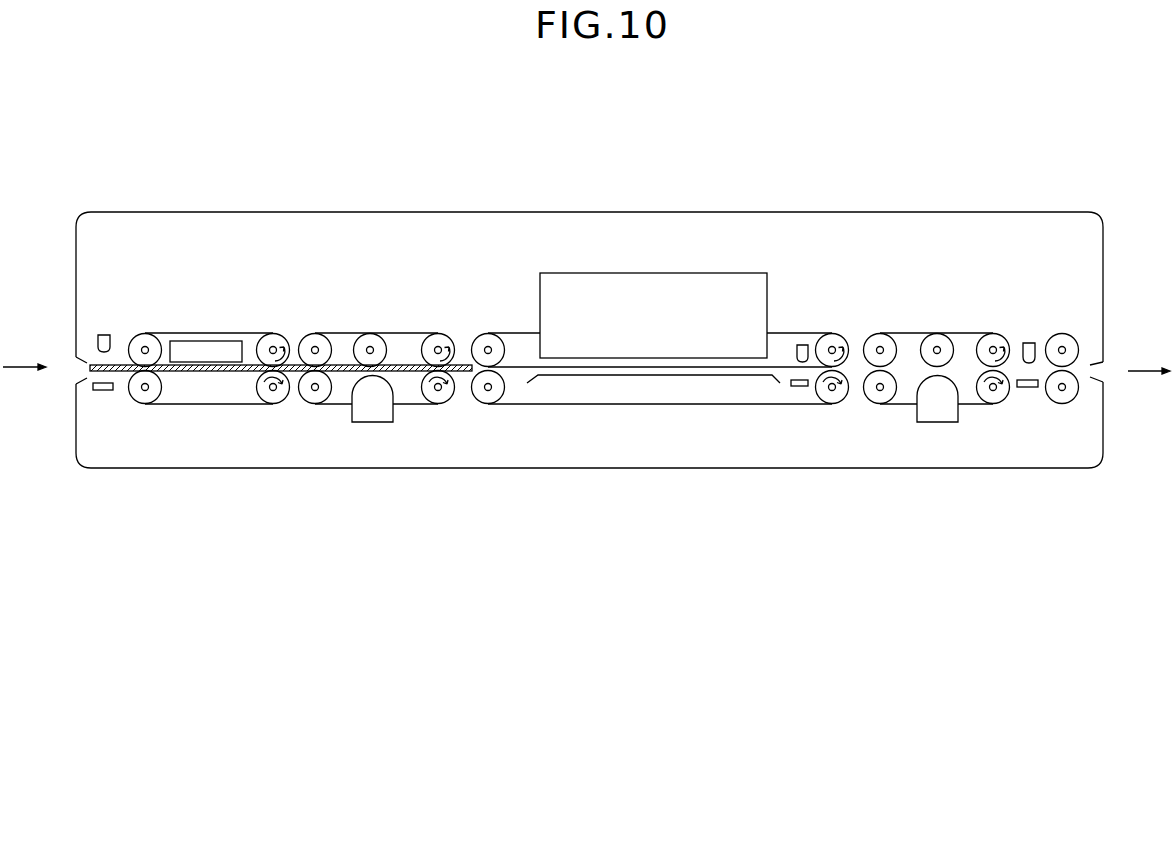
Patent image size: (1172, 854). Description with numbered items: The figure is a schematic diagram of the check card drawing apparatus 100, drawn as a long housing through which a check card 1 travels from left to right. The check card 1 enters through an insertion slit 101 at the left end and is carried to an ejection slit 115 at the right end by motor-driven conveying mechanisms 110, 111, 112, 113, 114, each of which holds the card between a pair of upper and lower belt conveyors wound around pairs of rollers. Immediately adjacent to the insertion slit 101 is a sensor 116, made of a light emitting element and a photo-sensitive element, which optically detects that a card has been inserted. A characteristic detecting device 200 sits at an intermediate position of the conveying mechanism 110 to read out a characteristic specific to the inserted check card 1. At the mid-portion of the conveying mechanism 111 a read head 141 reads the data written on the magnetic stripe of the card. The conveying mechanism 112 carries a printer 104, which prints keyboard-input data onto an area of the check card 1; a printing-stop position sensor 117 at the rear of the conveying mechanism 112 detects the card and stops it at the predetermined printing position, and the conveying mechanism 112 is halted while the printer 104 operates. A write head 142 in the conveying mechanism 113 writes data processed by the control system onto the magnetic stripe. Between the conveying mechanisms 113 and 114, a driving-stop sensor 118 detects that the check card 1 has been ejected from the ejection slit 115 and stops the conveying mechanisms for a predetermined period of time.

The check card 1 is at (462, 365).
The check card drawing apparatus 100 is at (811, 209).
The insertion slit 101 is at (78, 370).
The printer 104 is at (637, 272).
The conveying mechanism 110 is at (165, 404).
The conveying mechanism 111 is at (415, 405).
The conveying mechanism 112 is at (548, 404).
The conveying mechanism 113 is at (973, 404).
The conveying mechanism 114 is at (1052, 404).
The ejection slit 115 is at (1098, 370).
The sensor 116 is at (105, 333).
The printing-stop position sensor 117 is at (801, 344).
The driving-stop sensor 118 is at (1030, 343).
The read head 141 is at (373, 422).
The write head 142 is at (932, 418).
The characteristic detecting device 200 is at (212, 341).